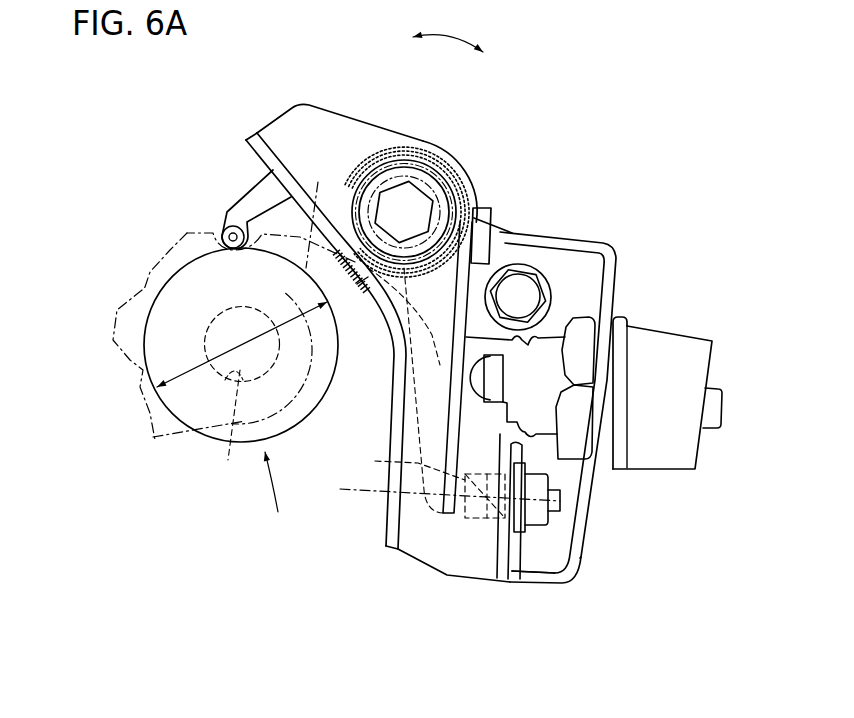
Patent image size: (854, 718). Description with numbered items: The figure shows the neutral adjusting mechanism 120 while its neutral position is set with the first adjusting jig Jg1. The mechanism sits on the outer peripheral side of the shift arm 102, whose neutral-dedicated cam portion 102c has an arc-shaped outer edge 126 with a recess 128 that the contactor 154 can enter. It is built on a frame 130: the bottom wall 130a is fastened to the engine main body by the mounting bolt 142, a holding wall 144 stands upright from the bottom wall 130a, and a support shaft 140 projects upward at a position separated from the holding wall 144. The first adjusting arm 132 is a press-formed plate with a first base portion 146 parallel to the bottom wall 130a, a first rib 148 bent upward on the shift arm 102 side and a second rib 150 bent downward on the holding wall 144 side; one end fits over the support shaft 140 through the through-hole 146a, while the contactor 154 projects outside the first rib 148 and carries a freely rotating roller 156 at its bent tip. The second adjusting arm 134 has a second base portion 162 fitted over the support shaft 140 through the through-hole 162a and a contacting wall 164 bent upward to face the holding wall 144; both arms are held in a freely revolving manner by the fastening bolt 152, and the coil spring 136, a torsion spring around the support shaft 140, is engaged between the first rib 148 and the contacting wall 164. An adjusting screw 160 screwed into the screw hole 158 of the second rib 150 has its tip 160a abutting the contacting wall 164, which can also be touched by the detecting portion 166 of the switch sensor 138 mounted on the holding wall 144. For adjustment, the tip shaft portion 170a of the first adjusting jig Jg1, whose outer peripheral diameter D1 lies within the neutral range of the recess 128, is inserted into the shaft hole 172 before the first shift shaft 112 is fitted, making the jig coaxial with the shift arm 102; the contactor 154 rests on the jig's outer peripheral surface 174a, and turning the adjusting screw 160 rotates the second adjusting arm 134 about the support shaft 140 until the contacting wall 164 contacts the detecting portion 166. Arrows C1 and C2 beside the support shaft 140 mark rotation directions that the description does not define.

The shift arm 102 is at (200, 321).
The neutral-dedicated cam portion 102c is at (334, 226).
The outer edge 126 is at (165, 245).
The recess 128 is at (243, 250).
The roller 156 is at (222, 213).
The contactor 154 is at (252, 198).
The support shaft 140 is at (496, 150).
The through-hole 146a is at (496, 150).
The through-hole 162a is at (410, 133).
The coil spring 136 is at (438, 145).
The fastening bolt 152 is at (410, 200).
The second adjusting arm 134 is at (497, 253).
The neutral adjusting mechanism 120 is at (584, 220).
The frame 130 is at (617, 250).
The mounting bolt 142 is at (518, 292).
The switch sensor 138 is at (648, 330).
The detecting portion 166 is at (477, 372).
The contacting wall 164 is at (530, 388).
The outer peripheral surface 174a is at (142, 360).
The tip shaft portion 170a is at (263, 358).
The shaft hole 172 is at (218, 438).
The first shift shaft 112 is at (218, 438).
The tip 160a is at (396, 465).
The second base portion 162 is at (432, 488).
The adjusting screw 160 is at (537, 503).
The first rib 148 is at (388, 519).
The screw hole 158 is at (445, 512).
The second rib 150 is at (510, 545).
The first base portion 146 is at (420, 348).
The first adjusting arm 132 is at (403, 565).
The holding wall 144 is at (572, 553).
The bottom wall 130a is at (537, 567).
The outer peripheral diameter D1 is at (242, 344).
The first adjusting jig Jg1 is at (276, 493).
The first rotation direction C1 is at (448, 46).
The second rotation direction C2 is at (448, 46).